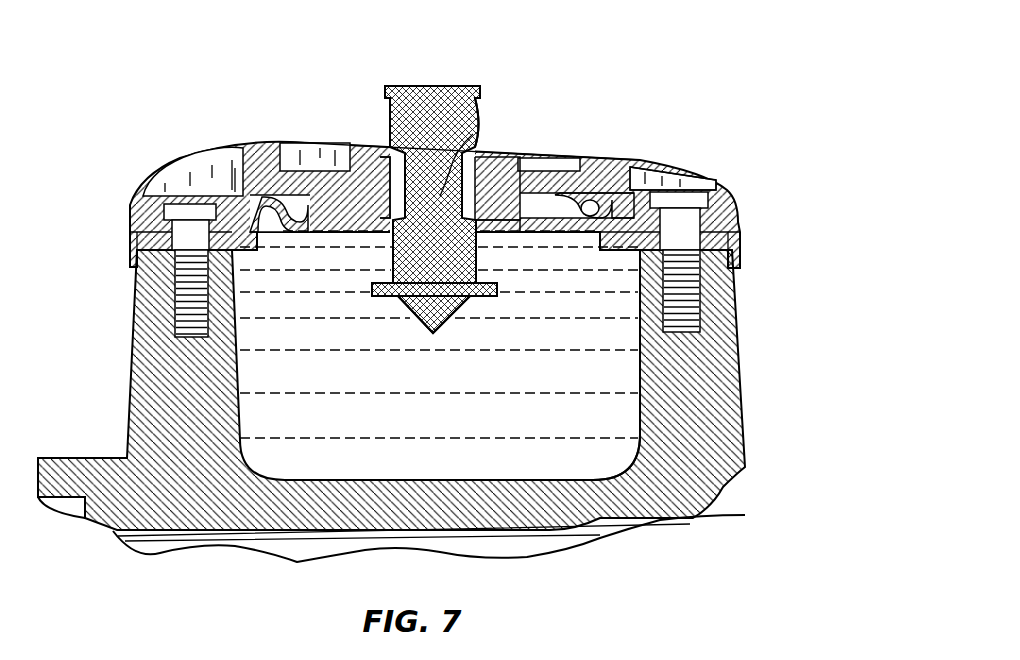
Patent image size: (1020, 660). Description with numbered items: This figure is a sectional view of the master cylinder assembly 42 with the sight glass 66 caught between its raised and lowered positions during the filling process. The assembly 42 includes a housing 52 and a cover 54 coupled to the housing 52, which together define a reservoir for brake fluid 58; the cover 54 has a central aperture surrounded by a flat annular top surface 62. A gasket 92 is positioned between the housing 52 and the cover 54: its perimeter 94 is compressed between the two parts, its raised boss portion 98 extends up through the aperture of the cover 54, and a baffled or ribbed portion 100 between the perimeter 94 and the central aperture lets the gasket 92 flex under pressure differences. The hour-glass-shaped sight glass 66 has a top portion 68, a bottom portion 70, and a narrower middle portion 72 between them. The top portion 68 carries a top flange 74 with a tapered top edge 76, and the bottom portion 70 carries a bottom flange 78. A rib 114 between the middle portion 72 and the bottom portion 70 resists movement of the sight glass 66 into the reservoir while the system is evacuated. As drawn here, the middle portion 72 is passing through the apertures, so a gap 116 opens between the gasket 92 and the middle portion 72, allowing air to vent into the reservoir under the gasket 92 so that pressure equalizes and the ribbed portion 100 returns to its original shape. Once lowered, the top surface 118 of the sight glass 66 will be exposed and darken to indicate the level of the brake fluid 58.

The master cylinder assembly 42 is at (716, 76).
The housing 52 is at (717, 390).
The cover 54 is at (275, 147).
The brake fluid 58 is at (627, 400).
The flat annular top surface 62 is at (548, 160).
The sight glass 66 is at (450, 105).
The top portion 68 is at (478, 124).
The bottom portion 70 is at (437, 268).
The middle portion 72 is at (473, 134).
The top flange 74 is at (482, 93).
The tapered top edge 76 is at (388, 94).
The bottom flange 78 is at (488, 296).
The gasket 92 is at (750, 237).
The perimeter 94 is at (133, 240).
The raised boss portion 98 is at (382, 160).
The ribbed portion 100 is at (590, 185).
The rib 114 is at (490, 230).
The gap 116 is at (532, 230).
The top surface 118 is at (440, 83).